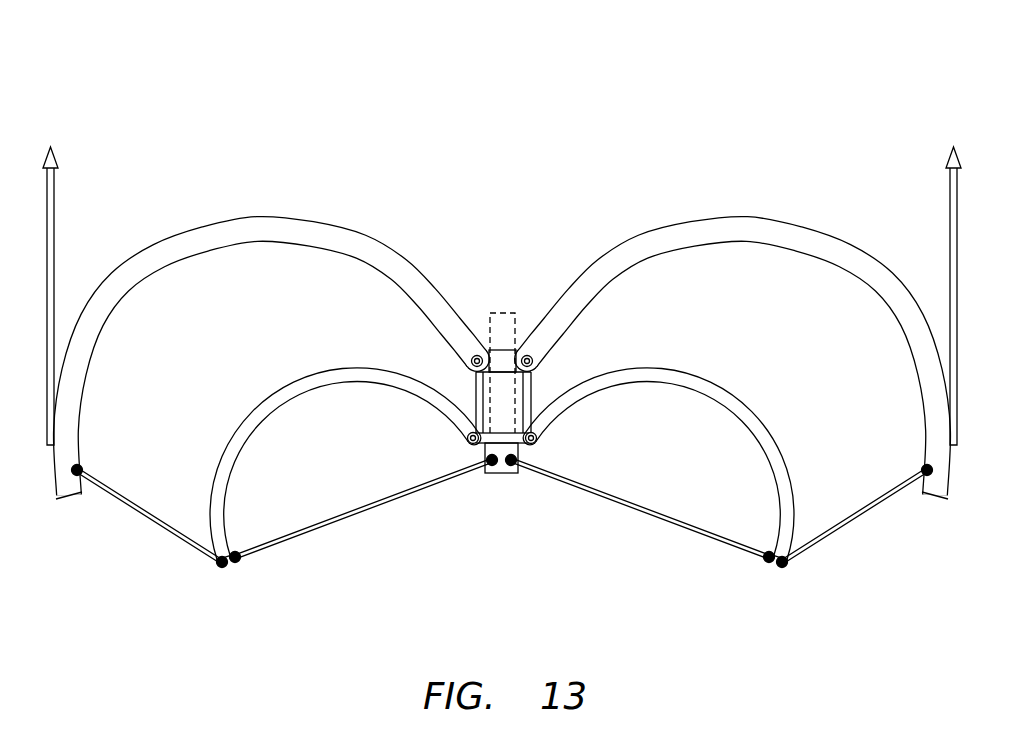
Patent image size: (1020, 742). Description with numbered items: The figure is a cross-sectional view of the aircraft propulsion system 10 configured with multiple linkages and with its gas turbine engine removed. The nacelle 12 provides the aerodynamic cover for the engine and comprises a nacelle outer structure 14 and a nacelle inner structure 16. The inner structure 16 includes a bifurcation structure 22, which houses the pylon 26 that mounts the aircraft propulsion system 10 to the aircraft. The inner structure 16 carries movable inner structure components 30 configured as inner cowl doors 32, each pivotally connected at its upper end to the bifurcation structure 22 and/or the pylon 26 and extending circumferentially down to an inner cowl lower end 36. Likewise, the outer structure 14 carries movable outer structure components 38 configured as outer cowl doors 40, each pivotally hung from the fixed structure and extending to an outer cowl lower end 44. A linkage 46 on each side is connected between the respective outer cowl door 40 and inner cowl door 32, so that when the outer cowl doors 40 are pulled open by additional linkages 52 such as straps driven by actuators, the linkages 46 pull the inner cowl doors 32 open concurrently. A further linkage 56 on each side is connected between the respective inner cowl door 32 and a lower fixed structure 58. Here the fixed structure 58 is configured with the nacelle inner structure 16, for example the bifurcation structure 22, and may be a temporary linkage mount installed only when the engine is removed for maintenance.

The aircraft propulsion system 10 is at (502, 342).
The nacelle 12 is at (571, 220).
The nacelle outer structure 14 is at (375, 197).
The nacelle inner structure 16 is at (572, 375).
The bifurcation structure 22 is at (472, 388).
The pylon 26 is at (502, 312).
The inner structure component 30 is at (503, 430).
The inner cowl door 32 is at (503, 430).
The inner cowl lower end 36 is at (224, 565).
The outer structure component 38 is at (502, 300).
The outer cowl door 40 is at (502, 300).
The outer cowl lower end 44 is at (77, 500).
The linkage 46 is at (146, 521).
The additional linkage 52 is at (55, 216).
The linkage 56 is at (344, 527).
The fixed structure 58 is at (496, 476).